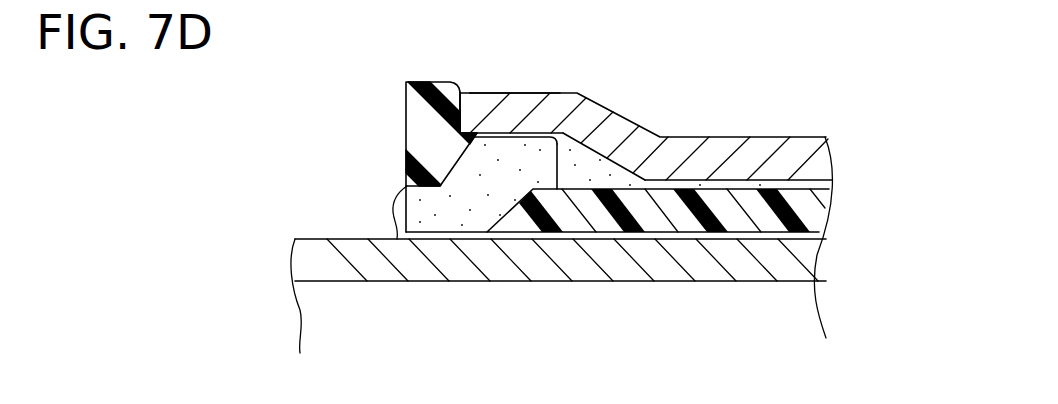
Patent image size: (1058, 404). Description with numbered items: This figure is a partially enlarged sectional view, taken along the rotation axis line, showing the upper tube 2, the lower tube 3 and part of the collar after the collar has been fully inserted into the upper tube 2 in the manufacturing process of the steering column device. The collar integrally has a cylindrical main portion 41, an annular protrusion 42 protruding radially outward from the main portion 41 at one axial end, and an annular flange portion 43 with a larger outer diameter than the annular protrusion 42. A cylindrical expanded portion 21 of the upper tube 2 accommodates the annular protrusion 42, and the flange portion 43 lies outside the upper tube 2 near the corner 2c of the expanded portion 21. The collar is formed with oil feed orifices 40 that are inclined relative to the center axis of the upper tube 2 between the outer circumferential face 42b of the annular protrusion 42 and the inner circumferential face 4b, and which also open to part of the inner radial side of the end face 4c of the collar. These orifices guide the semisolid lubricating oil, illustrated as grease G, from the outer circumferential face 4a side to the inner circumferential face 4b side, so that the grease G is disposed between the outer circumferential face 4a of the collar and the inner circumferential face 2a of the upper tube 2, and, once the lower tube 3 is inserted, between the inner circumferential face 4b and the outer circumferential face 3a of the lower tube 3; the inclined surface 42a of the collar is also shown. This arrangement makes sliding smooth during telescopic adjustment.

The upper tube 2 is at (693, 155).
The inner circumferential face of the upper tube 2a is at (680, 181).
The corner portion of counter substrate 2c is at (452, 94).
The expanded portion 21 is at (495, 105).
The lower tube 3 is at (312, 252).
The outer circumferential face of the lower tube 3a is at (348, 238).
The outer circumferential face of the collar 4a is at (755, 195).
The inner circumferential face of the collar 4b is at (562, 234).
The end face of the collar 4c is at (405, 168).
The oil feed orifice 40 is at (462, 167).
The main portion 41 is at (638, 215).
The annular protrusion 42 is at (503, 152).
The inclined surface of sealing member 42a is at (560, 149).
The outer circumferential face of the annular protrusion 42b is at (513, 132).
The flange portion 43 is at (460, 160).
The grease G is at (440, 217).